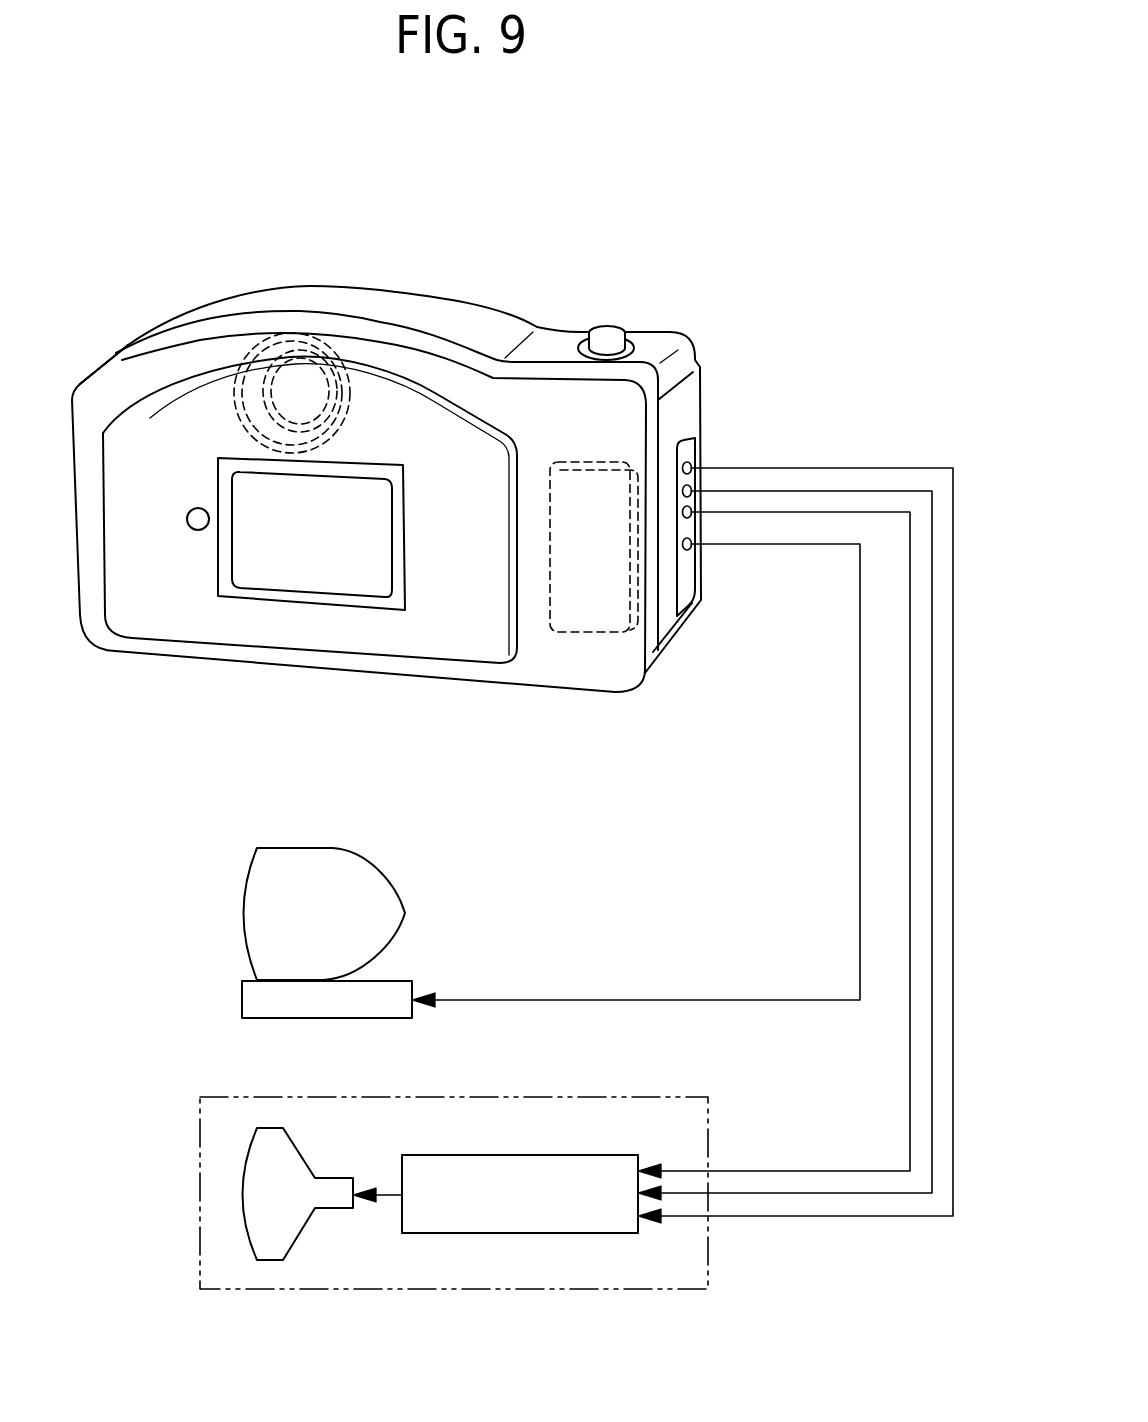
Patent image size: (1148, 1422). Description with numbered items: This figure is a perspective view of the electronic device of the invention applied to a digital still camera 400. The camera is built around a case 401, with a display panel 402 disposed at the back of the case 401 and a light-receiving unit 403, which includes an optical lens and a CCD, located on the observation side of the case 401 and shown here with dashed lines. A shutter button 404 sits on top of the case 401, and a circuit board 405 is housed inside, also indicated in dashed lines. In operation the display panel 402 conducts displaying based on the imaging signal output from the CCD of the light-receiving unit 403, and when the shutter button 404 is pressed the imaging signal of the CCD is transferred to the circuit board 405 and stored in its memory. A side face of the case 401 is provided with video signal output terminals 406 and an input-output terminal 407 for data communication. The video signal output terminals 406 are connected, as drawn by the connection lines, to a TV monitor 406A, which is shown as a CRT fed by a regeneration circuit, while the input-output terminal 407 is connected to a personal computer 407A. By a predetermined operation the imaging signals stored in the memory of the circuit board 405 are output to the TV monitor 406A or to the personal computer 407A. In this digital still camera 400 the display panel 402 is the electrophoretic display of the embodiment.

The digital still camera 400 is at (516, 222).
The case 401 is at (140, 384).
The display panel 402 is at (310, 552).
The light-receiving unit 403 is at (333, 358).
The shutter button 404 is at (605, 335).
The circuit board 405 is at (588, 600).
The video signal output terminals 406 is at (693, 463).
The input-output terminal 407 is at (687, 550).
The personal computer 407A is at (240, 897).
The TV monitor 406A is at (200, 1186).